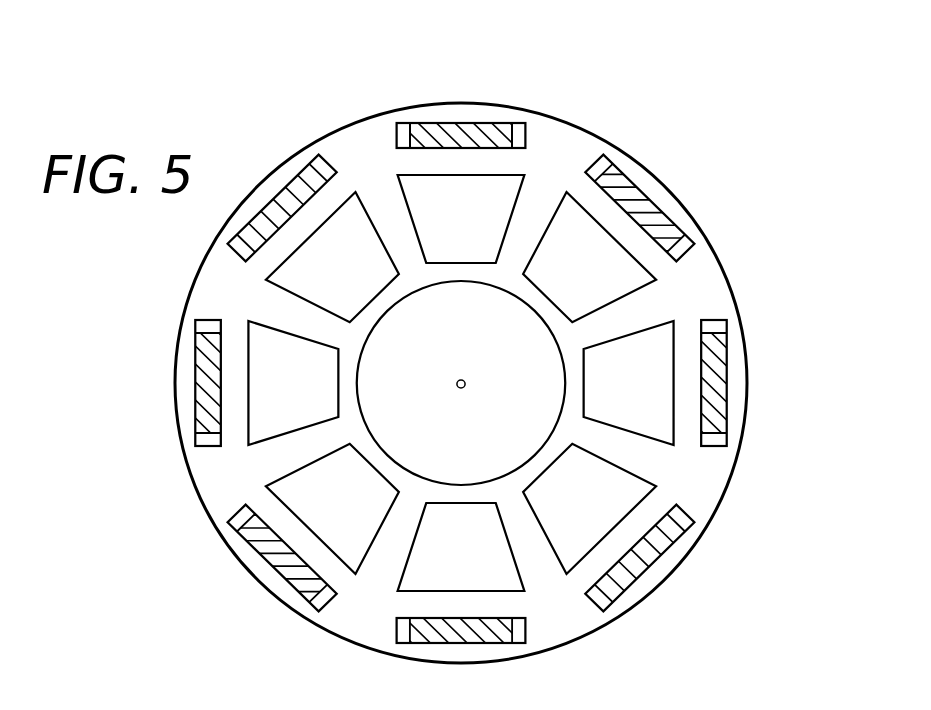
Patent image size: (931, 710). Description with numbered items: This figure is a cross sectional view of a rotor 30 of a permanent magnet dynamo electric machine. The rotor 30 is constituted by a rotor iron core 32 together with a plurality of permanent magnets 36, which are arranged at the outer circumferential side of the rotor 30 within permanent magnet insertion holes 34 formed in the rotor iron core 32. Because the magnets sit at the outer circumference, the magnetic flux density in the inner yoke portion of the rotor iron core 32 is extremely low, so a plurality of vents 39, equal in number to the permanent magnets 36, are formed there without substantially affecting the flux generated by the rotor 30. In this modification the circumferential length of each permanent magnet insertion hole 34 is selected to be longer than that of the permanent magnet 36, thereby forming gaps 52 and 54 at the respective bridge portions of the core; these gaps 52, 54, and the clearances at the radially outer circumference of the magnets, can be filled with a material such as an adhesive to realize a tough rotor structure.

The rotor 30 is at (705, 137).
The rotor iron core 32 is at (640, 302).
The permanent magnet insertion hole 34 is at (522, 137).
The permanent magnet 36 is at (422, 123).
The vent 39 is at (663, 432).
The gap 52 is at (398, 128).
The gap 54 is at (513, 127).